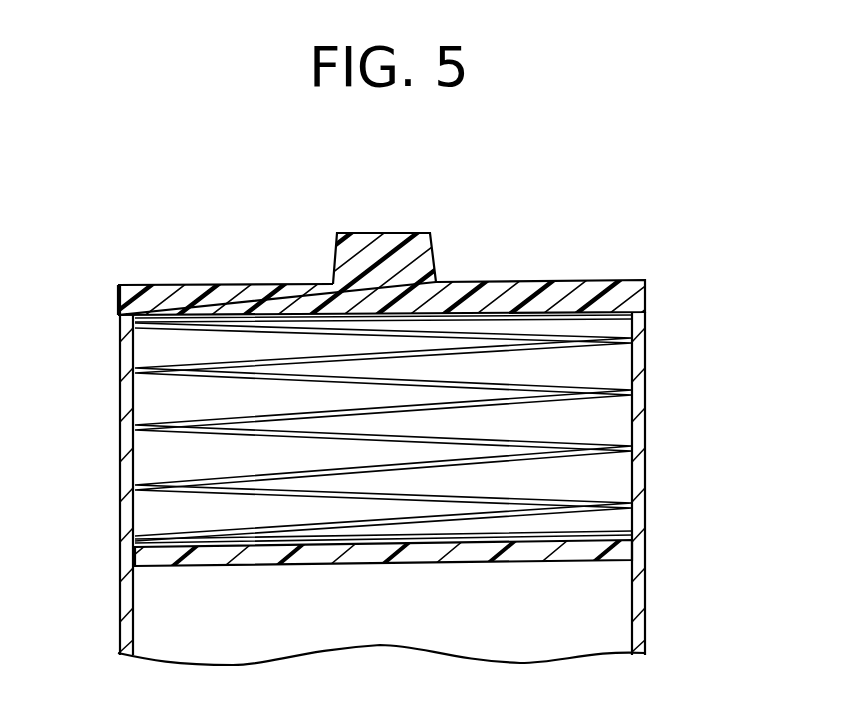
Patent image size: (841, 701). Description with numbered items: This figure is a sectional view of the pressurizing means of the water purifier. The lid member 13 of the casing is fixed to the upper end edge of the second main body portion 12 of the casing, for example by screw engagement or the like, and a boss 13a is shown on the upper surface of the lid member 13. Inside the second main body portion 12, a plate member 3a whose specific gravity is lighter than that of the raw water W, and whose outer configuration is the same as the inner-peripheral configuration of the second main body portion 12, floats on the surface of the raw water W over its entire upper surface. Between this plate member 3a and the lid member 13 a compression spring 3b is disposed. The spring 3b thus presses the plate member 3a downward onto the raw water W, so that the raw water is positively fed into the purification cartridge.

The lid member 13 is at (543, 281).
The boss 13a is at (394, 235).
The second main body portion 12 is at (647, 344).
The compression spring 3b is at (577, 400).
The plate member 3a is at (590, 558).
The raw water W is at (160, 605).